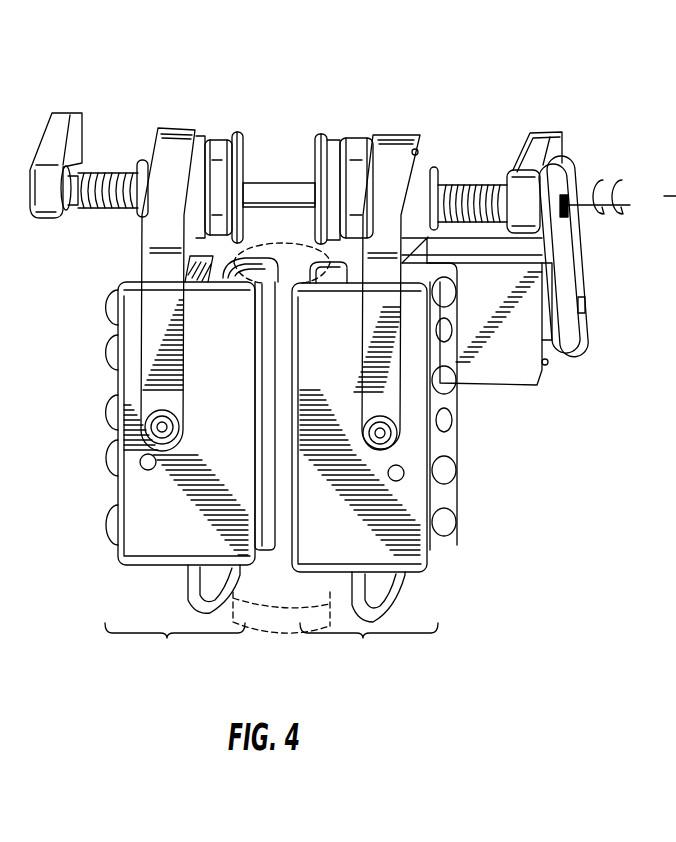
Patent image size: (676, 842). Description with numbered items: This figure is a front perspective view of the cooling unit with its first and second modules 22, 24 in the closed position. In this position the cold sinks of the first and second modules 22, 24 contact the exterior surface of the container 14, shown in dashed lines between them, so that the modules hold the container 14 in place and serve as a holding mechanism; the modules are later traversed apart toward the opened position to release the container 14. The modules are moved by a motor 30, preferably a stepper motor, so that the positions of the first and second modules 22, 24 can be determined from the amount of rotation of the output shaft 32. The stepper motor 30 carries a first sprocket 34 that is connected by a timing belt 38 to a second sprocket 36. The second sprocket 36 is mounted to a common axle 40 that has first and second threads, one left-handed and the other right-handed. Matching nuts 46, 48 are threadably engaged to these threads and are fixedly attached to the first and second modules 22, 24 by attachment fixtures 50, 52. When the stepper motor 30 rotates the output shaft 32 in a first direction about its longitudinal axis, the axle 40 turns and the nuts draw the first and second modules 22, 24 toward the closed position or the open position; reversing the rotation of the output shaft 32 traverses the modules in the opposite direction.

The container 14 is at (278, 631).
The first module 22 is at (191, 465).
The second module 24 is at (374, 468).
The motor 30 is at (500, 352).
The output shaft 32 is at (587, 310).
The first sprocket 34 is at (583, 288).
The second sprocket 36 is at (560, 182).
The timing belt 38 is at (558, 302).
The common axle 40 is at (276, 192).
The matching nut 46 is at (432, 180).
The matching nut 48 is at (138, 170).
The attachment fixture 50 is at (176, 158).
The attachment fixture 52 is at (385, 175).